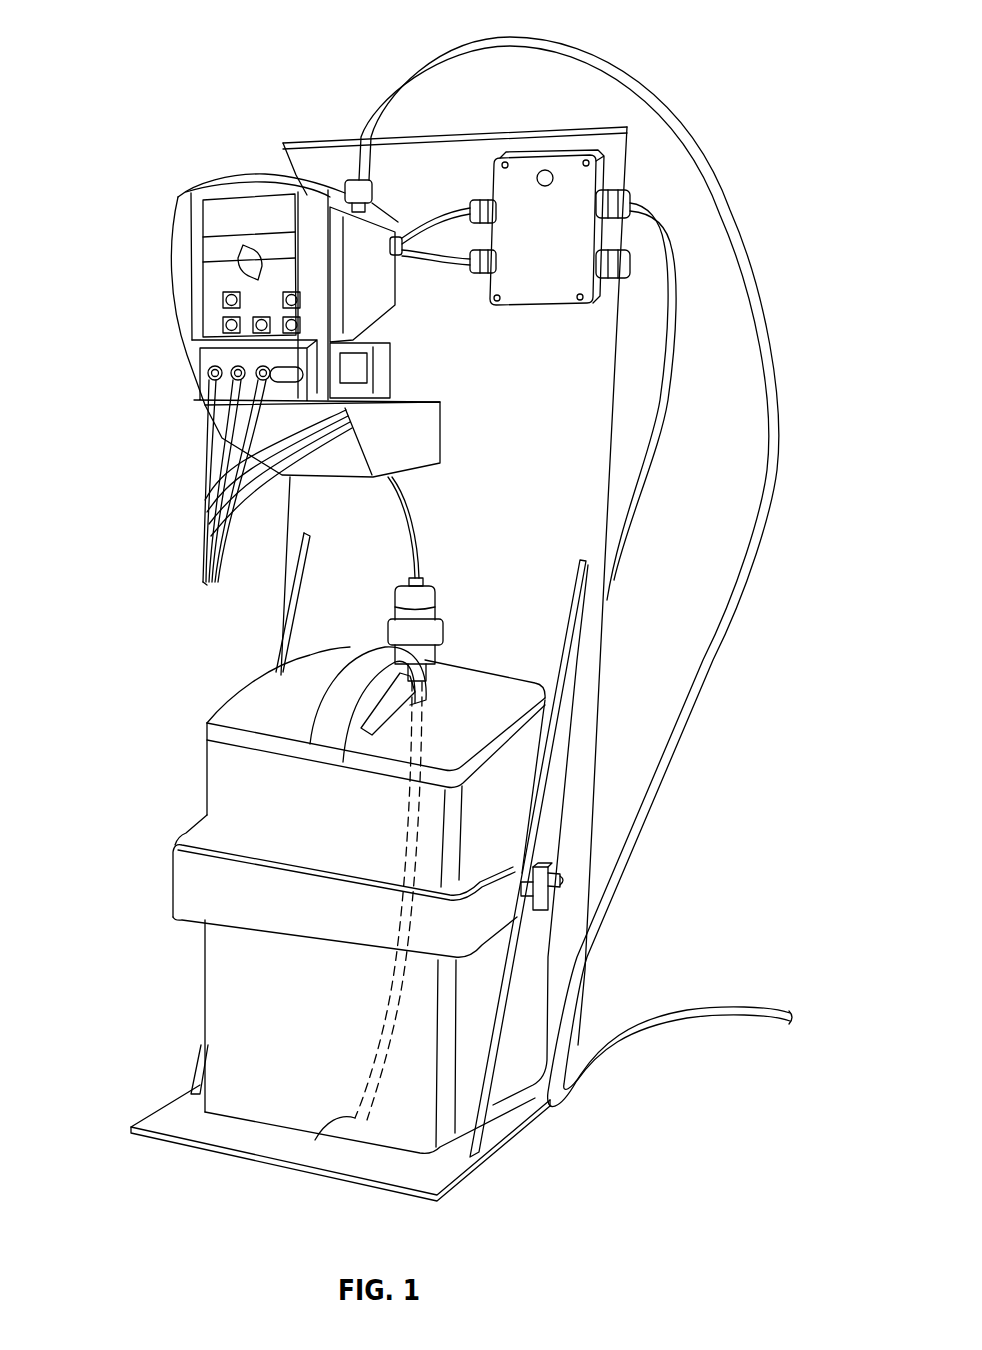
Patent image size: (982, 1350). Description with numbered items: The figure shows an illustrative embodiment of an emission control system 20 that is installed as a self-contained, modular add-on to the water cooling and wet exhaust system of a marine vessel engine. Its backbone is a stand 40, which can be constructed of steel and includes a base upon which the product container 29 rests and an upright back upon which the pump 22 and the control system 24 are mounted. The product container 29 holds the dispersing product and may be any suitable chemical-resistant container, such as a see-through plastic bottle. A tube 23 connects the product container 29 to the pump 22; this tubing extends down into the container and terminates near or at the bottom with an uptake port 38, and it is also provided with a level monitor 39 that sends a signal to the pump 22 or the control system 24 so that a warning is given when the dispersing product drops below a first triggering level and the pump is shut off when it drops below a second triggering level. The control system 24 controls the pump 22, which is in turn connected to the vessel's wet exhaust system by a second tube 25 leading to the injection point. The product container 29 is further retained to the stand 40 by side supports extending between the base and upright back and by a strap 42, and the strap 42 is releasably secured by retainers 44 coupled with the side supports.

The emission control system 20 is at (204, 99).
The pump 22 is at (233, 178).
The tube 23 is at (420, 548).
The control system 24 is at (533, 292).
The second tube 25 is at (566, 46).
The product container 29 is at (488, 678).
The uptake port 38 is at (315, 1140).
The level monitor 39 is at (367, 1122).
The stand 40 is at (606, 660).
The strap 42 is at (180, 833).
The retainers 44 is at (563, 882).